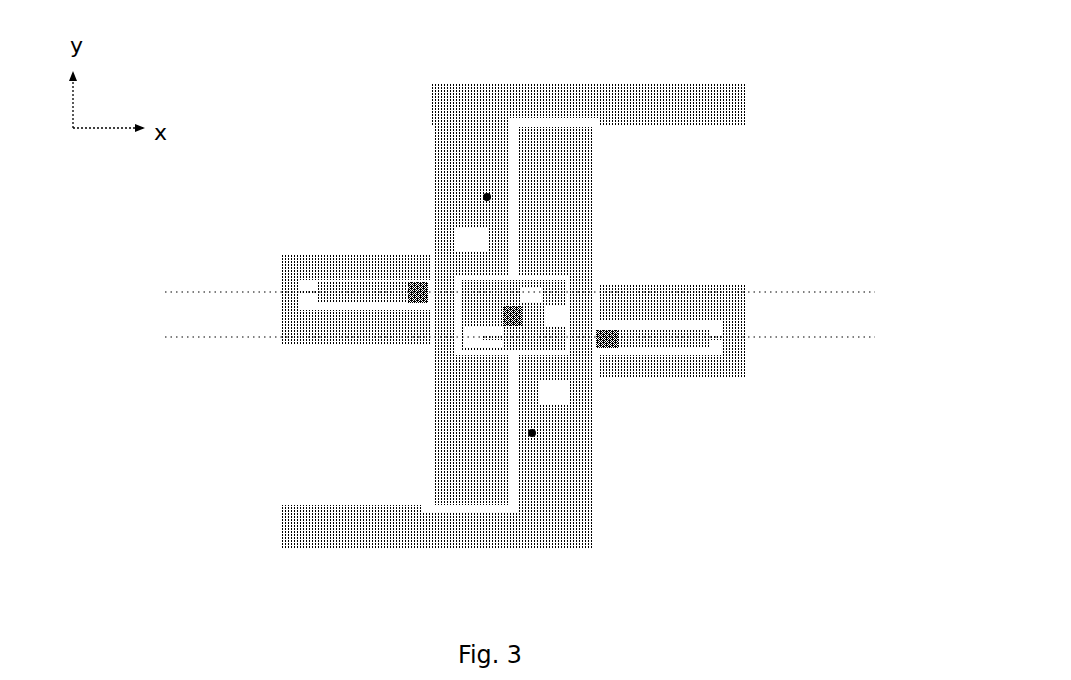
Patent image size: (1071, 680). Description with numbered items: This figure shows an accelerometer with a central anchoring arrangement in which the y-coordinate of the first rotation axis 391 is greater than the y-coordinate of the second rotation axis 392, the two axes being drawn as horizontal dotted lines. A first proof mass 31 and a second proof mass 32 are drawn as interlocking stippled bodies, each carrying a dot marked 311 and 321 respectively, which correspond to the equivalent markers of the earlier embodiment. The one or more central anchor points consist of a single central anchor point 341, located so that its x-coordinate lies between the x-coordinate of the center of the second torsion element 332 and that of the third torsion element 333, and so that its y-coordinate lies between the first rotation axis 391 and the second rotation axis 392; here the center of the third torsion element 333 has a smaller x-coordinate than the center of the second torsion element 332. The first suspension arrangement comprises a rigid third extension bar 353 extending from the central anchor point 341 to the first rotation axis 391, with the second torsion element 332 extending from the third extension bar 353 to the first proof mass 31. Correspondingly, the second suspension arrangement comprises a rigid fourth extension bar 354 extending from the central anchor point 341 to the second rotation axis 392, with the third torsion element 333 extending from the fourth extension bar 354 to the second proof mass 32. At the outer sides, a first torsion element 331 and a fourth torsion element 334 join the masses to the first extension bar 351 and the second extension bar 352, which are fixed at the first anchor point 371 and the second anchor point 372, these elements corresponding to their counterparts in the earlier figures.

The first proof mass 31 is at (465, 107).
The second proof mass 32 is at (560, 180).
The first proof mass center of gravity marker 311 is at (483, 193).
The second proof mass center of gravity marker 321 is at (537, 436).
The first torsion element 331 is at (305, 285).
The second torsion element 332 is at (535, 298).
The third torsion element 333 is at (492, 342).
The fourth torsion element 334 is at (715, 345).
The central anchor point 341 is at (510, 312).
The first extension bar 351 is at (360, 285).
The second extension bar 352 is at (660, 350).
The third extension bar 353 is at (548, 322).
The fourth extension bar 354 is at (468, 313).
The first anchor point 371 is at (413, 290).
The second anchor point 372 is at (606, 347).
The first rotation axis 391 is at (493, 295).
The second rotation axis 392 is at (493, 339).